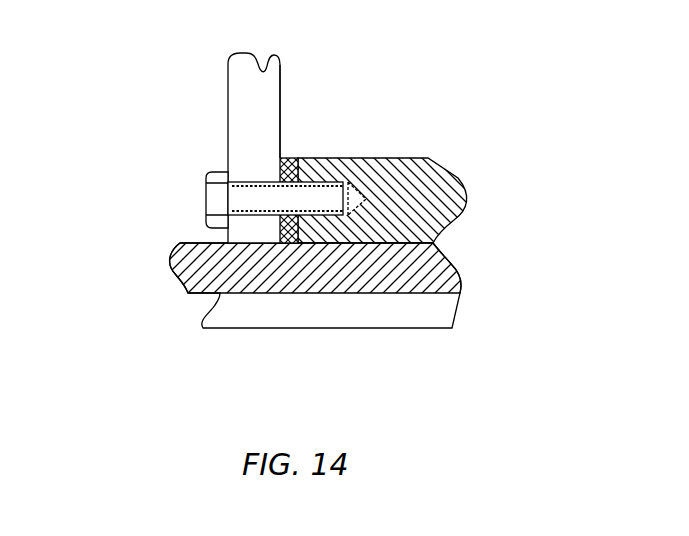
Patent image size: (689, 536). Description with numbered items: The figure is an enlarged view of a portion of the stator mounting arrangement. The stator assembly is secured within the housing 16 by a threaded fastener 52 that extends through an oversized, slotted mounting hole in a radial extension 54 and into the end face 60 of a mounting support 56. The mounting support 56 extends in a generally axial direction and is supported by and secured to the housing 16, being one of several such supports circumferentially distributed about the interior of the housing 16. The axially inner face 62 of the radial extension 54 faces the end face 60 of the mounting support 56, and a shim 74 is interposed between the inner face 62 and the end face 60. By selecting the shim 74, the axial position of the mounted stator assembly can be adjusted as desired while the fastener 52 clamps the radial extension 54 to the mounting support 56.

The housing 16 is at (172, 270).
The threaded fastener 52 is at (206, 198).
The radial extension 54 is at (250, 128).
The mounting support 56 is at (448, 177).
The end face 60 is at (308, 242).
The axially inner face 62 is at (280, 98).
The shim 74 is at (288, 157).